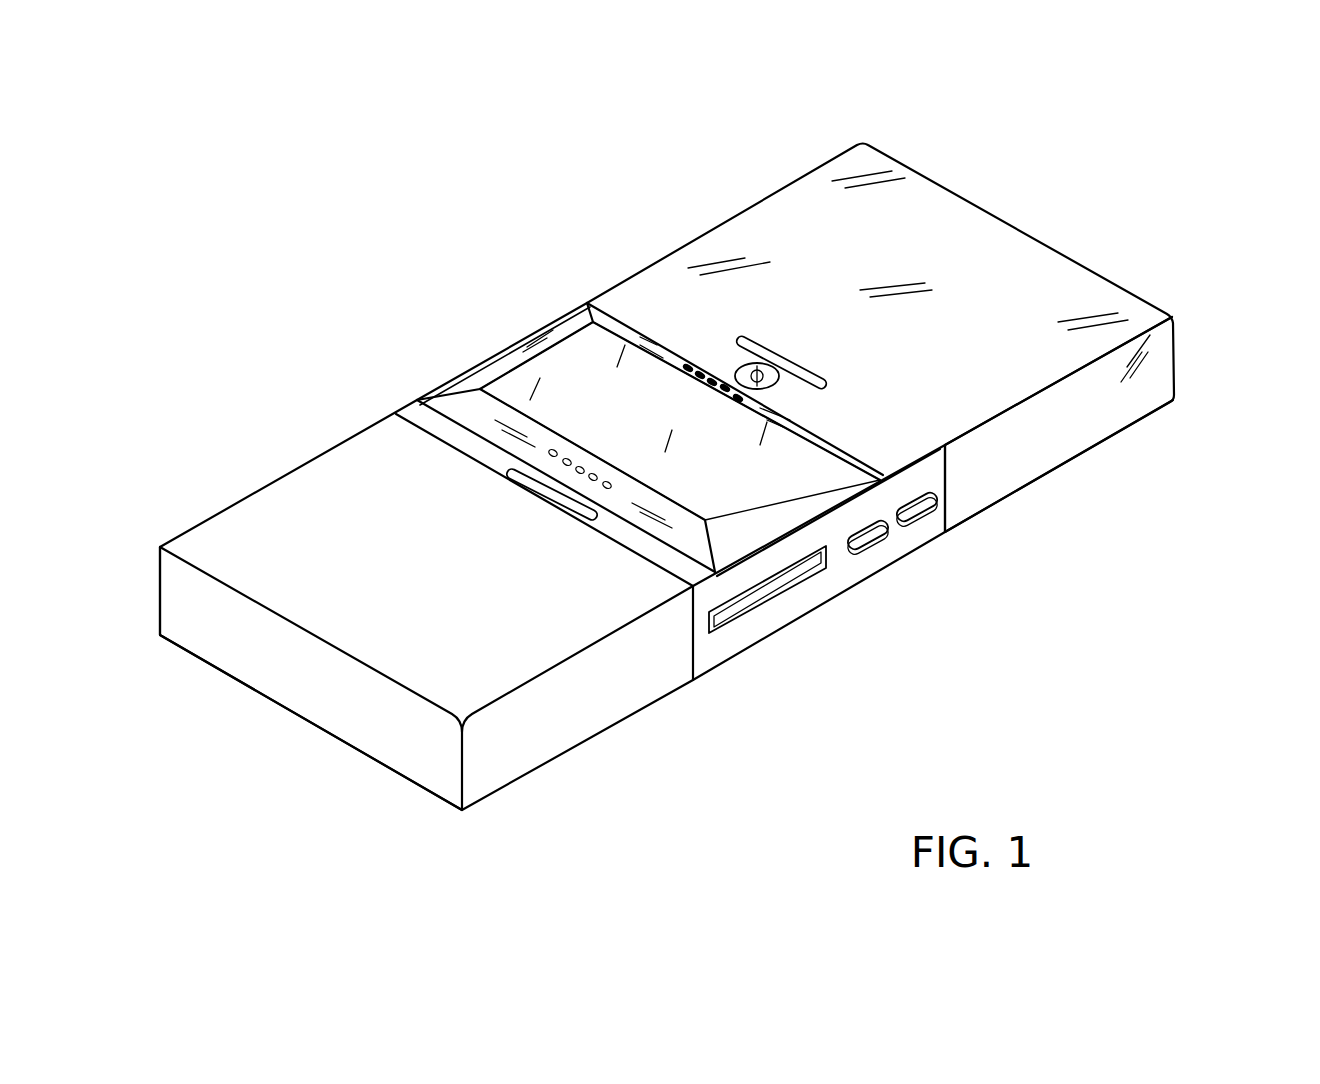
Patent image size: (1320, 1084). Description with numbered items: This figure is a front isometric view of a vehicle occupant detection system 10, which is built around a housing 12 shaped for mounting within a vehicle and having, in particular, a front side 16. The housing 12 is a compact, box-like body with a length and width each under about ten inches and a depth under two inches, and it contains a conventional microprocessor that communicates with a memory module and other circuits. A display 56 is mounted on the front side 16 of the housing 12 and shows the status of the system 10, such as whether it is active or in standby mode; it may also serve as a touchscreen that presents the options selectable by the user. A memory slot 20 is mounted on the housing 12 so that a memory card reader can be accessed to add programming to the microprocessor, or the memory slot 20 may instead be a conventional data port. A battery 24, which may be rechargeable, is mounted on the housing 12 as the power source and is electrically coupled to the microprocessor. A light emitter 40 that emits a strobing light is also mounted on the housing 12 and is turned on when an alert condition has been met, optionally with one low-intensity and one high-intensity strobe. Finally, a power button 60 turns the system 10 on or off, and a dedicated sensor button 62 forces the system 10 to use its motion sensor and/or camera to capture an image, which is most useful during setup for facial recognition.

The vehicle occupant detection system 10 is at (381, 216).
The housing 12 is at (643, 270).
The front side 16 is at (857, 431).
The memory slot 20 is at (747, 640).
The battery 24 is at (533, 740).
The light emitter 40 is at (1178, 355).
The display 56 is at (537, 387).
The power button 60 is at (920, 510).
The sensor button 62 is at (873, 540).